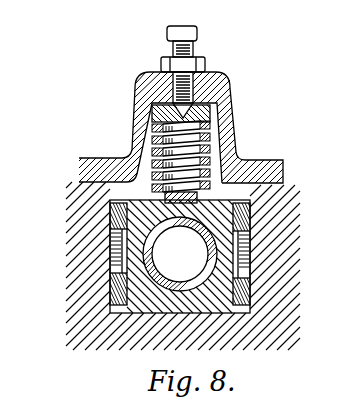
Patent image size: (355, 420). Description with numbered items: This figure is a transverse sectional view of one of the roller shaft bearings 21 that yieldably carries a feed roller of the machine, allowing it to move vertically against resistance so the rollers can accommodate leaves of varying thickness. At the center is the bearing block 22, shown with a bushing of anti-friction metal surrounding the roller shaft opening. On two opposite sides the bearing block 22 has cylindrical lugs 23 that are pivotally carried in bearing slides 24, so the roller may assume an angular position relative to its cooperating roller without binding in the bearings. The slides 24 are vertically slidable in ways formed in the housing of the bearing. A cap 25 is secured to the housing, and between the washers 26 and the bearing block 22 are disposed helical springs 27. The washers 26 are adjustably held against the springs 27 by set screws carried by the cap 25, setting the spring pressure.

The bearing 21 is at (232, 78).
The bearing block 22 is at (180, 249).
The cylindrical lugs 23 is at (112, 228).
The bearing slides 24 is at (110, 300).
The cap 25 is at (239, 163).
The washers 26 is at (208, 110).
The helical springs 27 is at (152, 143).